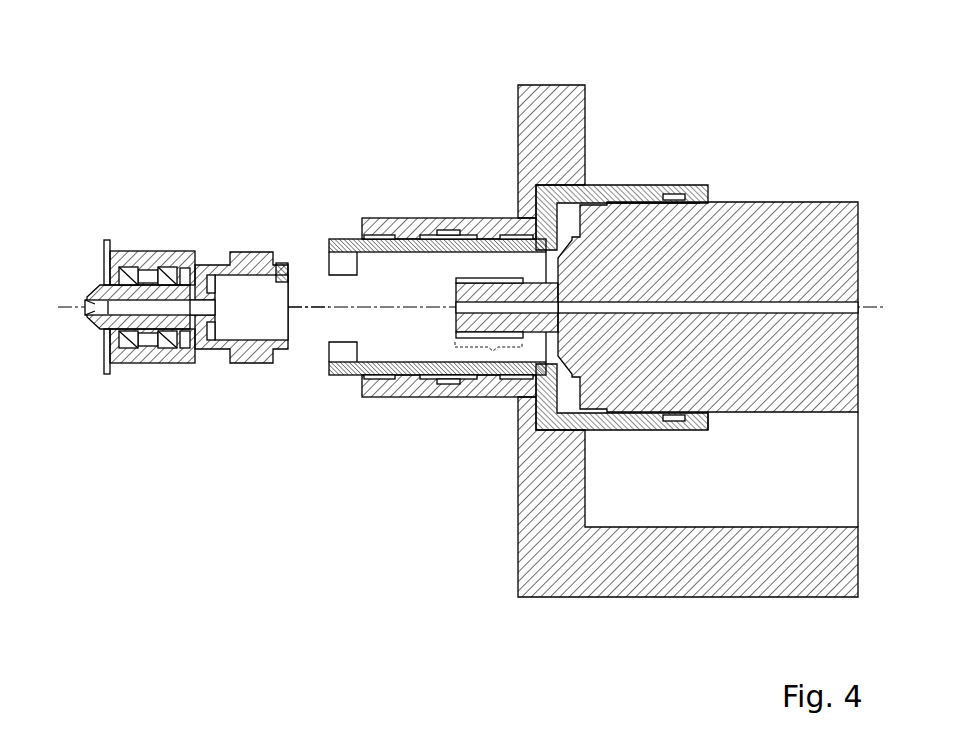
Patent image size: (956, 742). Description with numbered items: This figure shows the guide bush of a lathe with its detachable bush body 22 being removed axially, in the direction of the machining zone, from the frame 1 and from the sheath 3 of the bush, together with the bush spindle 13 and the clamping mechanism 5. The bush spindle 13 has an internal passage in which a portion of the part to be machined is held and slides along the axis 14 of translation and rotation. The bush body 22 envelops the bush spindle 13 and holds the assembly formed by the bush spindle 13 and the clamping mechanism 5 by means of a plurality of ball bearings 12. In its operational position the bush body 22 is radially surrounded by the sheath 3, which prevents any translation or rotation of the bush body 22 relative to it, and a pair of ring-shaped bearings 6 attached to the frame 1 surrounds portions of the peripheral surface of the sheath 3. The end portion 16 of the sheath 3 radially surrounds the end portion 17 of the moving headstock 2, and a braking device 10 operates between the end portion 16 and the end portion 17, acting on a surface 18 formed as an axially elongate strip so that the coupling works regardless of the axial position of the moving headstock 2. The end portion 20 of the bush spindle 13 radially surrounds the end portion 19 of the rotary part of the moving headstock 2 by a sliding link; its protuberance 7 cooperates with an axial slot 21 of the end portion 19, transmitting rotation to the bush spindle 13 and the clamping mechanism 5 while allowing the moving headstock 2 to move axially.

The frame 1 is at (535, 118).
The moving headstock 2 is at (803, 235).
The sheath of the bush 3 is at (455, 378).
The clamping mechanism 5 is at (88, 315).
The ring-shaped bearings 6 is at (386, 233).
The protuberance 7 is at (280, 265).
The braking device 10 is at (680, 430).
The ball bearings 12 is at (130, 340).
The bush spindle 13 is at (160, 363).
The axis 14 is at (316, 315).
The end portion of the sheath 16 is at (585, 85).
The end portion of the moving headstock 17 is at (642, 218).
The surface 18 is at (708, 432).
The end portion of the rotary part of the moving headstock 19 is at (490, 350).
The end portion of the bush spindle 20 is at (240, 302).
The axial slot 21 is at (478, 276).
The bush body 22 is at (172, 250).